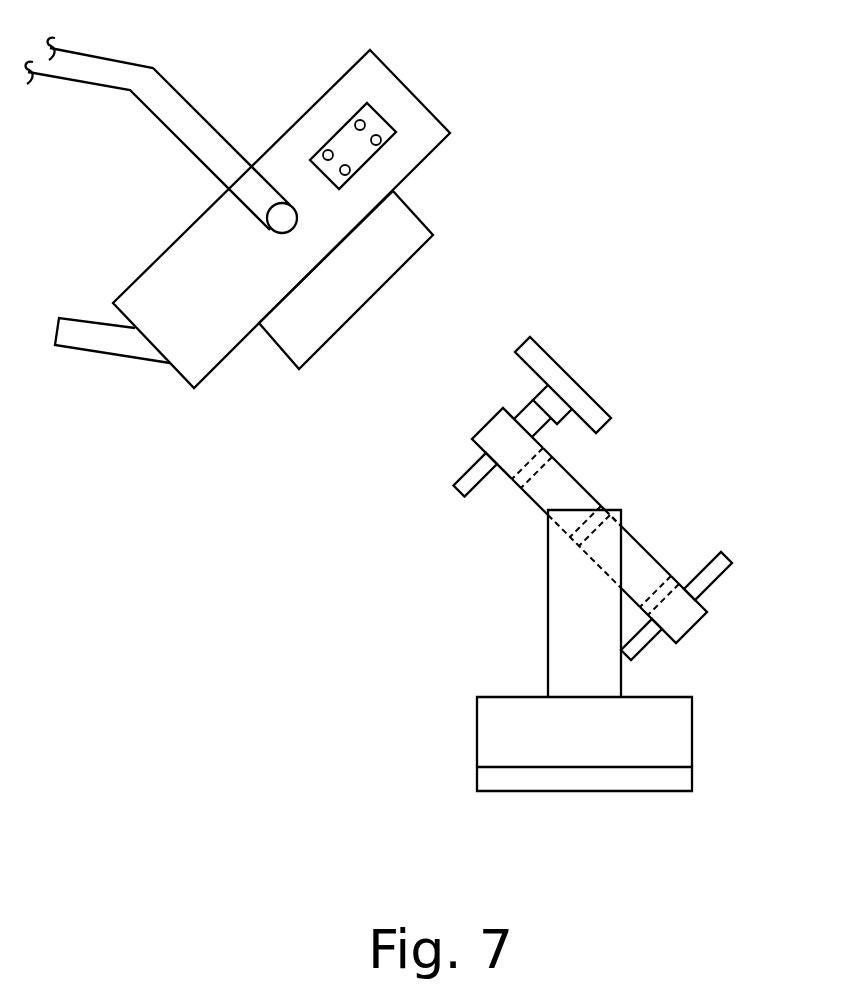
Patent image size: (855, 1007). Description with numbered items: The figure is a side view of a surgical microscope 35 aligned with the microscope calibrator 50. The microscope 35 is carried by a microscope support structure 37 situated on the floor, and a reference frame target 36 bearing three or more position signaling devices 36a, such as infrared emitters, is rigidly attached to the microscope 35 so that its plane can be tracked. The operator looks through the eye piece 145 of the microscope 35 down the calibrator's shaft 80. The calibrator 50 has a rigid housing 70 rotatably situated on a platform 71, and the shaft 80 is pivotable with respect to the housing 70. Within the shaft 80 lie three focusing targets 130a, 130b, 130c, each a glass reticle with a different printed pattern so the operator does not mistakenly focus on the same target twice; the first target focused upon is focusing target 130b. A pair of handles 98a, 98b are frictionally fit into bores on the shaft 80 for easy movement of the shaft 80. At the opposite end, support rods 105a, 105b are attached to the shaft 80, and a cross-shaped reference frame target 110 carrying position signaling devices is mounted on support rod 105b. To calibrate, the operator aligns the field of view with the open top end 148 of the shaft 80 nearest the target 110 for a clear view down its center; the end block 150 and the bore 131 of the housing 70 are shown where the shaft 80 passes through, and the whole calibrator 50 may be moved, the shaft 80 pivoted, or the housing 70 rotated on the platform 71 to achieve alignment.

The surgical microscope 35 is at (410, 88).
The reference frame target 36 is at (395, 132).
The position signaling devices 36a is at (345, 165).
The microscope support structure 37 is at (123, 75).
The eye piece 145 is at (413, 212).
The microscope calibrator 50 is at (690, 390).
The housing 70 is at (510, 621).
The platform 71 is at (678, 778).
The shaft 80 is at (477, 449).
The reference frame target 110 is at (548, 330).
The support rod 105a is at (462, 477).
The support rod 105b is at (530, 417).
The open top end 148 is at (487, 423).
The second end block 150 is at (692, 628).
The focusing target 130a is at (540, 447).
The focusing target 130b is at (610, 510).
The focusing target 130c is at (670, 572).
The bore 131 is at (546, 520).
The handle 98a is at (640, 642).
The handle 98b is at (712, 585).